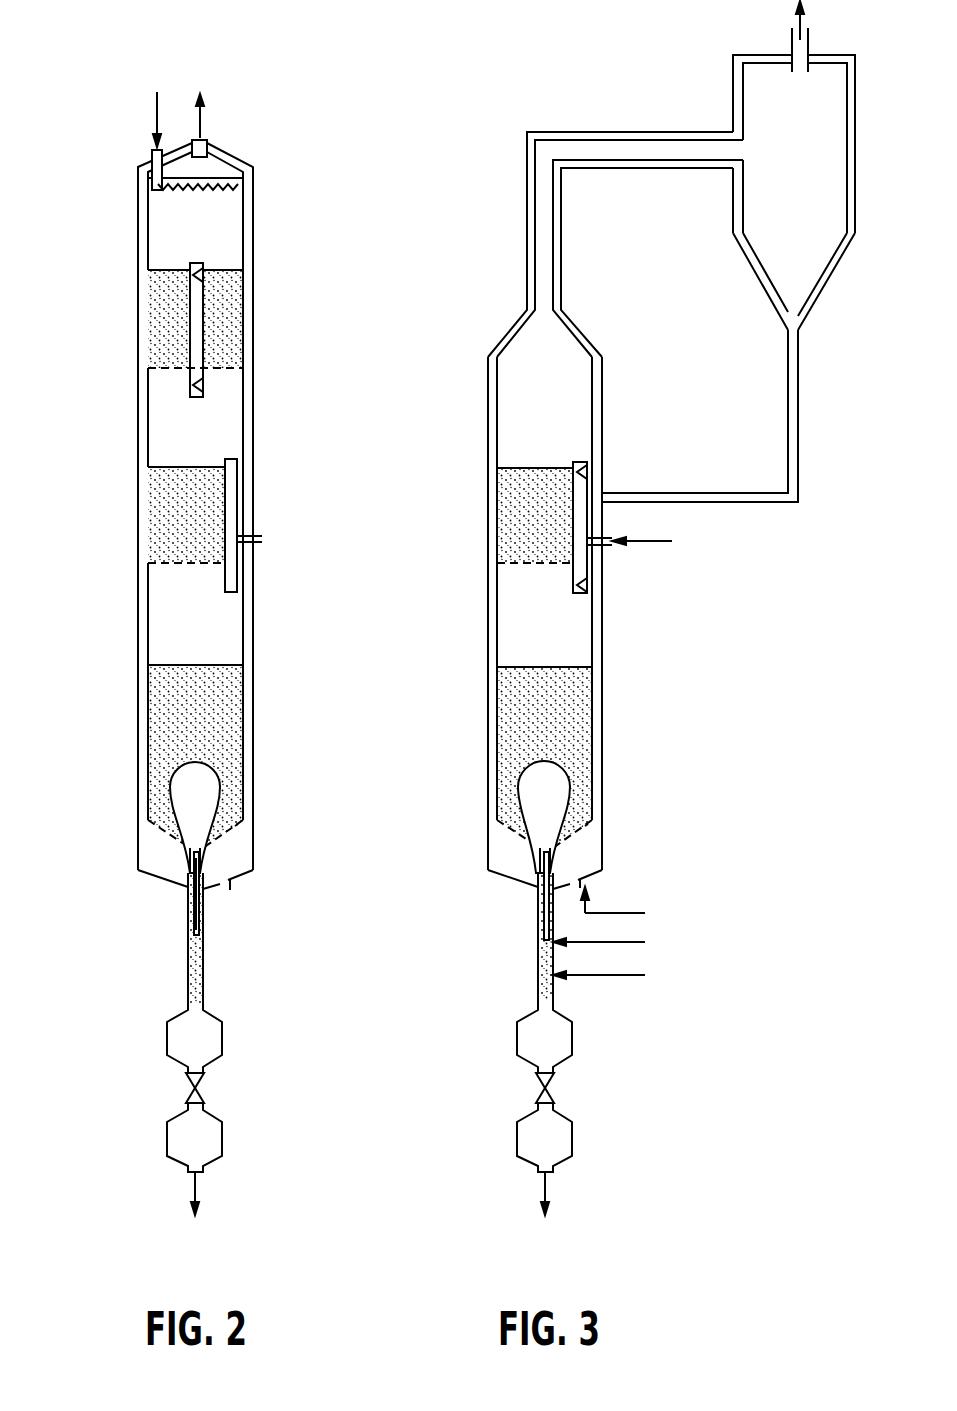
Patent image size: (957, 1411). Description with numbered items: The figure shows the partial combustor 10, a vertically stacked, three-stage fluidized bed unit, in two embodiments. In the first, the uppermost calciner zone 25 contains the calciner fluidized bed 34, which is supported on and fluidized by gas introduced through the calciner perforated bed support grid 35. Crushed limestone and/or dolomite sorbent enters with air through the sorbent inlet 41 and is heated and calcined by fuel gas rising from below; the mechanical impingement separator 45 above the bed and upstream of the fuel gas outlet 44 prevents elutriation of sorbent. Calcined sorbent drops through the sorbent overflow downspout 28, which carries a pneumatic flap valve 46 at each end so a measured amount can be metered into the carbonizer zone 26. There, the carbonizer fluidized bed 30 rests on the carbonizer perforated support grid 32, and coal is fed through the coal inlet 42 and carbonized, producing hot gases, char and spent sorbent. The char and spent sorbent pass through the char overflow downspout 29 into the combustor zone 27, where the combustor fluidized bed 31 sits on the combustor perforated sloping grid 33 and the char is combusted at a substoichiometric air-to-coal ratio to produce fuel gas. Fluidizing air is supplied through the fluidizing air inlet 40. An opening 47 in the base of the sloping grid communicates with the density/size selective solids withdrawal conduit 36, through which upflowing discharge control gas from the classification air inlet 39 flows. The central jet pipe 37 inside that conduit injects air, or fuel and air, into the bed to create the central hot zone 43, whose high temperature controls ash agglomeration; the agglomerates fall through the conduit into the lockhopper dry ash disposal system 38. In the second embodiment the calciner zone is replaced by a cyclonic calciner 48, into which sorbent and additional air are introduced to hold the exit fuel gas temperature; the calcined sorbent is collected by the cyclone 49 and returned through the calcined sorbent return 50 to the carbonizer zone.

In FIG. 2, the partial combustor 10 is at (362, 213).
In FIG. 2, the calciner zone 25 is at (162, 237).
In FIG. 2, the carbonizer zone 26 is at (162, 428).
In FIG. 3, the carbonizer zone 26 is at (510, 415).
In FIG. 2, the combustor zone 27 is at (163, 638).
In FIG. 3, the combustor zone 27 is at (515, 625).
In FIG. 2, the sorbent overflow downspout 28 is at (200, 350).
In FIG. 2, the char overflow downspout 29 is at (236, 512).
In FIG. 2, the carbonizer fluidized bed 30 is at (172, 488).
In FIG. 3, the carbonizer fluidized bed 30 is at (523, 490).
In FIG. 2, the combustor fluidized bed 31 is at (178, 705).
In FIG. 3, the combustor fluidized bed 31 is at (523, 700).
In FIG. 2, the carbonizer perforated support grid 32 is at (163, 563).
In FIG. 2, the combustor perforated sloping grid 33 is at (228, 830).
In FIG. 3, the combustor perforated sloping grid 33 is at (578, 832).
In FIG. 2, the calciner fluidized bed 34 is at (165, 310).
In FIG. 2, the calciner perforated bed support grid 35 is at (216, 373).
In FIG. 2, the density/size selective solids withdrawal conduit 36 is at (192, 920).
In FIG. 2, the central jet pipe 37 is at (196, 935).
In FIG. 2, the lockhopper dry ash disposal system 38 is at (223, 1032).
In FIG. 3, the lockhopper dry ash disposal system 38 is at (545, 1126).
In FIG. 2, the classification air inlet 39 is at (205, 972).
In FIG. 3, the classification air inlet 39 is at (545, 927).
In FIG. 2, the fluidizing air inlet 40 is at (232, 886).
In FIG. 2, the sorbent inlet 41 is at (157, 127).
In FIG. 3, the sorbent inlet 41 is at (652, 132).
In FIG. 2, the coal inlet 42 is at (263, 540).
In FIG. 2, the central hot zone 43 is at (224, 783).
In FIG. 3, the central hot zone 43 is at (574, 783).
In FIG. 2, the fuel gas outlet 44 is at (210, 143).
In FIG. 2, the mechanical impingement separator 45 is at (245, 190).
In FIG. 2, the flap valve 46 is at (200, 275).
In FIG. 3, the flap valve 46 is at (582, 476).
In FIG. 2, the opening 47 is at (178, 838).
In FIG. 3, the opening 47 is at (530, 857).
In FIG. 3, the cyclonic calciner 48 is at (720, 280).
In FIG. 3, the cyclone 49 is at (738, 202).
In FIG. 3, the calcined sorbent return 50 is at (798, 438).